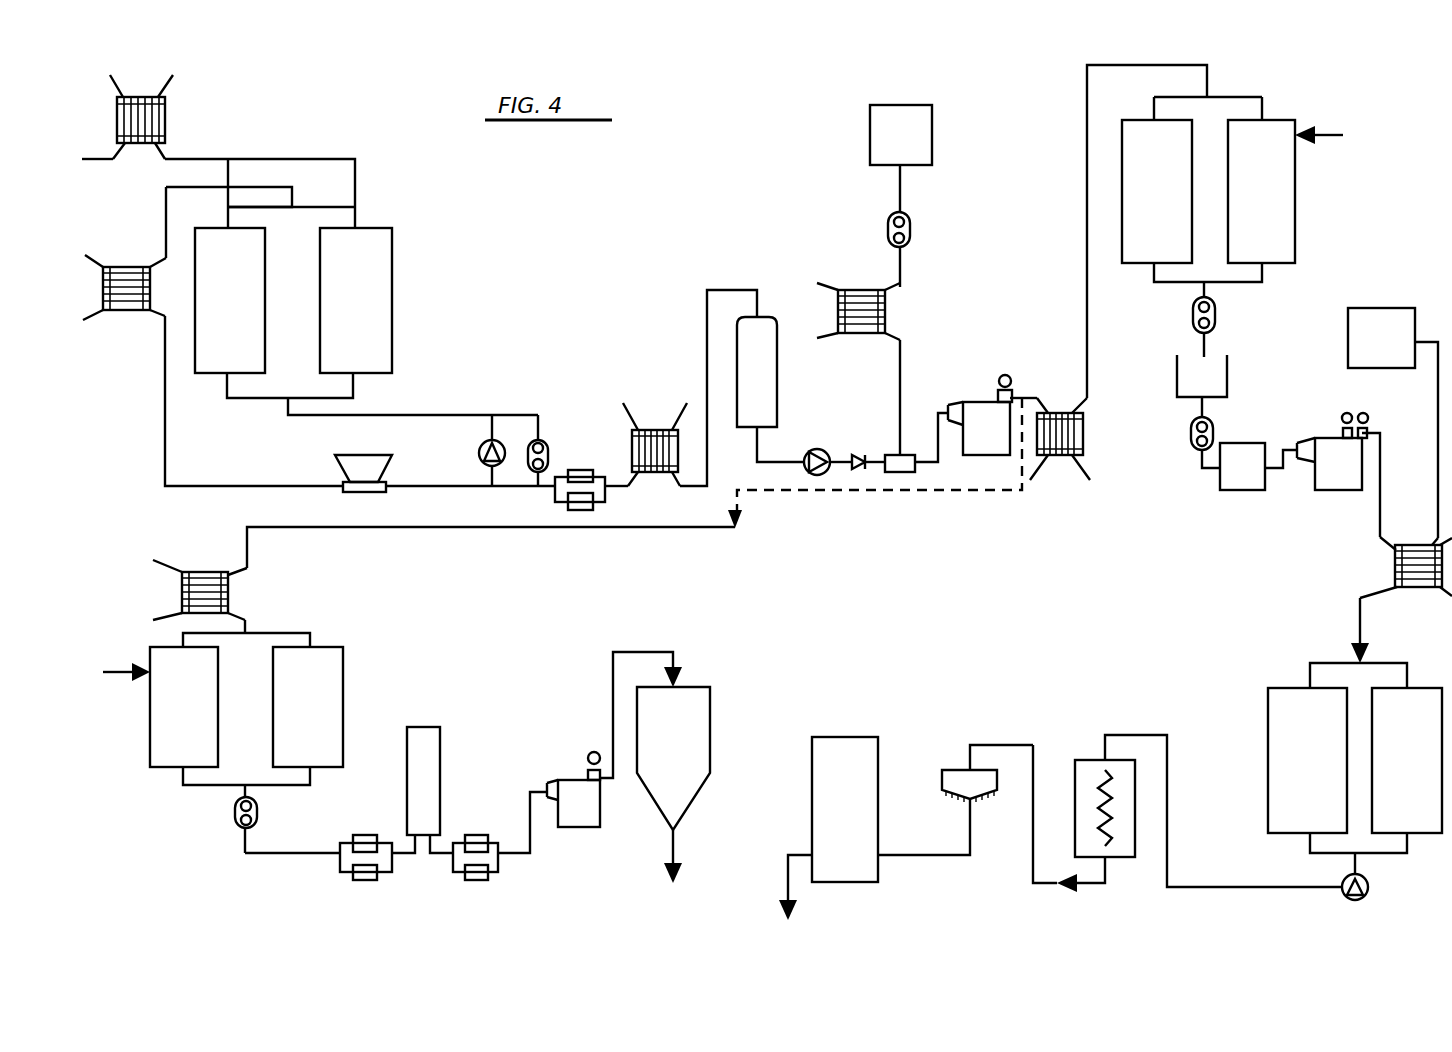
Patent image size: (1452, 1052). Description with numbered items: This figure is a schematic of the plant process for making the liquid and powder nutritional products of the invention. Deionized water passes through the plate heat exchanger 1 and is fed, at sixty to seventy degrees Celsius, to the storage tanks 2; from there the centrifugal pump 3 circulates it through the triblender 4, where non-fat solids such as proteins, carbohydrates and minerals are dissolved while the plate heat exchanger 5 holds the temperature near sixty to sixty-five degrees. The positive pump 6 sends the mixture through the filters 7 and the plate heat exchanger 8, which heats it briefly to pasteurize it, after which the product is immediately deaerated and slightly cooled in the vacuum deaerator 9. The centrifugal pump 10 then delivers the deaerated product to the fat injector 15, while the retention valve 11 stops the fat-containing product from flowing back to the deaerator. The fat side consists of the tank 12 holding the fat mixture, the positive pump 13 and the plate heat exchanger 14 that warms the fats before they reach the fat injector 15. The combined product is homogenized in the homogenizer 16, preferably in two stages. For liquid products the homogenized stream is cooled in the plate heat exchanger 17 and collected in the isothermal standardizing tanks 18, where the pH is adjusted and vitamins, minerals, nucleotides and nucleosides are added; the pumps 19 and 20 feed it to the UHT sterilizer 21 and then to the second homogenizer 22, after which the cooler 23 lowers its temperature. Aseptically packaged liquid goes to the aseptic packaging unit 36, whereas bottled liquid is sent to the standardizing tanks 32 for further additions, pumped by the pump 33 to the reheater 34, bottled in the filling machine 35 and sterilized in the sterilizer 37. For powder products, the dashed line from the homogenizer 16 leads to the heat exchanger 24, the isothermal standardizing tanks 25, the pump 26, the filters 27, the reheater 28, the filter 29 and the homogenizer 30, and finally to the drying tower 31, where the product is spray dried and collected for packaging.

The plate heat exchanger 1 is at (167, 111).
The storage tanks 2 is at (230, 313).
The centrifugal pump 3 is at (482, 445).
The triblender 4 is at (360, 466).
The plate heat exchanger 5 is at (119, 310).
The positive pump 6 is at (549, 447).
The filters 7 is at (593, 507).
The plate heat exchanger 8 is at (650, 473).
The vacuum deaerator 9 is at (766, 387).
The centrifugal pump 10 is at (825, 446).
The retention valve 11 is at (862, 450).
The tank 12 is at (914, 146).
The positive pump 13 is at (911, 225).
The plate heat exchanger 14 is at (865, 290).
The fat injector 15 is at (906, 455).
The homogenizer 16 is at (1002, 439).
The plate heat exchanger 17 is at (1060, 413).
The isothermal standardizing tanks 18 is at (1172, 202).
The pump 19 is at (1192, 312).
The pump 20 is at (1194, 450).
The UHT sterilizer 21 is at (1256, 474).
The homogenizer 22 is at (1352, 476).
The cooler 23 is at (1420, 545).
The heat exchanger 24 is at (205, 572).
The isothermal standardizing tanks 25 is at (202, 712).
The pump 26 is at (269, 796).
The filters 27 is at (366, 835).
The reheater 28 is at (438, 785).
The filter 29 is at (491, 820).
The homogenizer 30 is at (592, 818).
The drying tower 31 is at (682, 744).
The standardizing tanks 32 is at (1320, 763).
The pump 33 is at (1368, 887).
The reheater 34 is at (1089, 765).
The filling machine 35 is at (951, 770).
The aseptic packaging unit 36 is at (1396, 351).
The sterilizer 37 is at (842, 737).